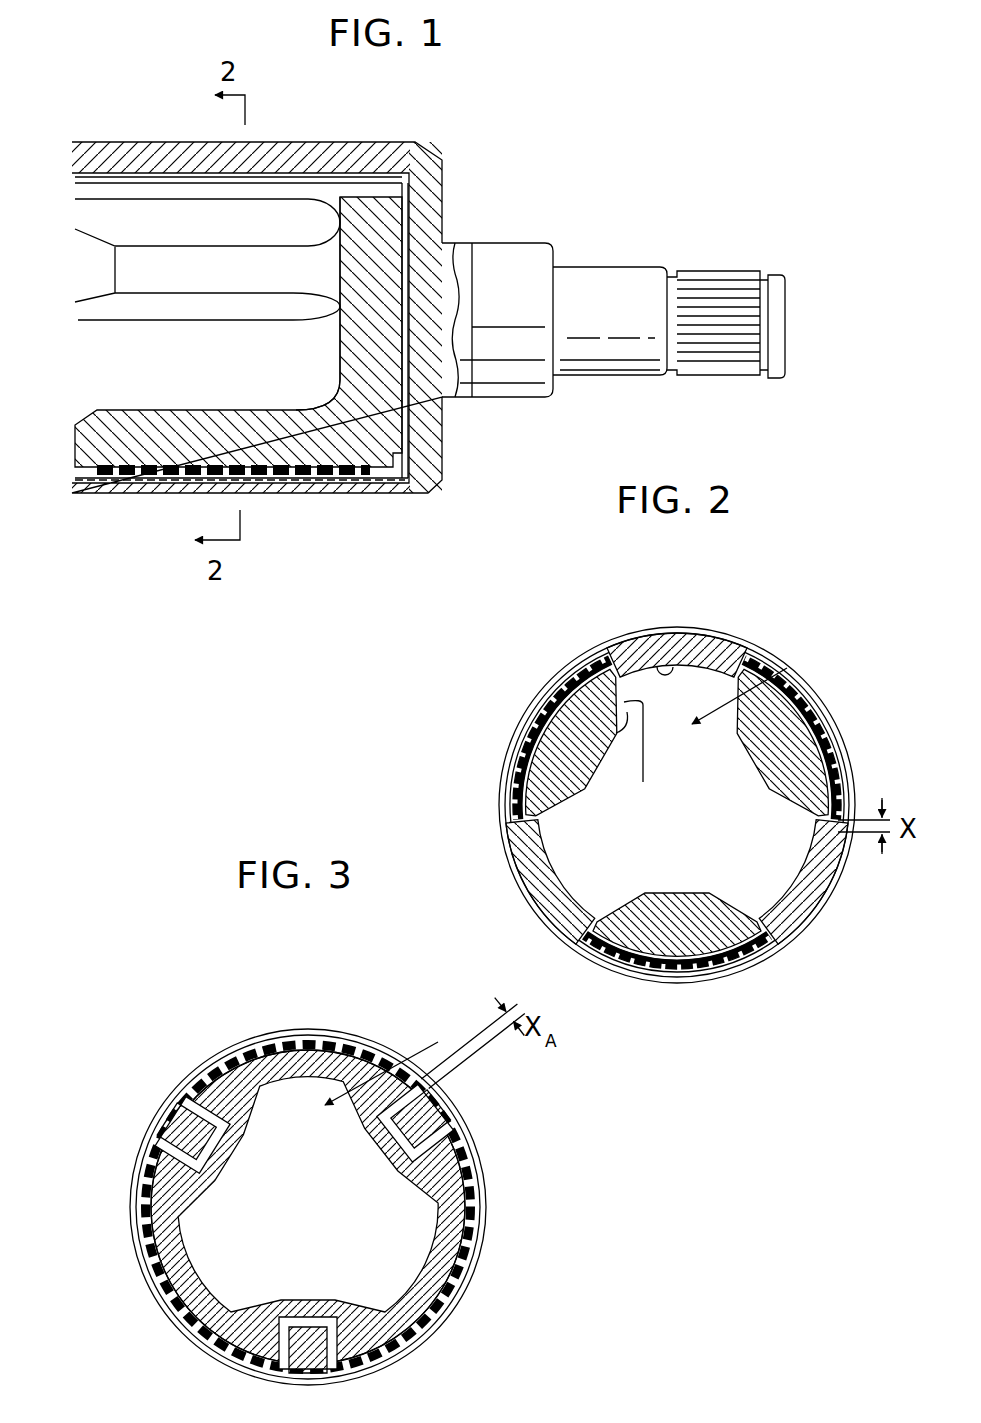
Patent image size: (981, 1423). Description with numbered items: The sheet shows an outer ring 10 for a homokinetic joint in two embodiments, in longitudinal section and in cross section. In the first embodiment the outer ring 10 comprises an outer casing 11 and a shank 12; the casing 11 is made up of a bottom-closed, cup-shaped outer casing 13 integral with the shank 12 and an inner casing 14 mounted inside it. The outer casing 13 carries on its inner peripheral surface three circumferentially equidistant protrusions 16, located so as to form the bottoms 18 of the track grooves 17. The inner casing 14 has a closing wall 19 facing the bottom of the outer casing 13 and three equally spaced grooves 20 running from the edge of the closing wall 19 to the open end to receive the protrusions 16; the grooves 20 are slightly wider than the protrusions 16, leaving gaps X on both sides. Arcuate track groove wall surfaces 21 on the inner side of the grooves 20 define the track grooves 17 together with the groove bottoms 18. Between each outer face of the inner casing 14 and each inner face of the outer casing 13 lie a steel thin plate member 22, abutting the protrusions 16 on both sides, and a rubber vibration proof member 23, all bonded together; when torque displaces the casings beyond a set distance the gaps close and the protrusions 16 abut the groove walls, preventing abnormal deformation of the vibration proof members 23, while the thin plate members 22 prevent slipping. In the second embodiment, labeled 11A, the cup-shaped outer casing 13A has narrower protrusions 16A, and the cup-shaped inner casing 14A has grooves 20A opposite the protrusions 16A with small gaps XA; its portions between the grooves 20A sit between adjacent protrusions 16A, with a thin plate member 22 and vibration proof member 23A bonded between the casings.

In FIG. 1, the outer ring 10 is at (462, 180).
In FIG. 1, the outer casing 11 is at (386, 143).
In FIG. 2, the outer casing 11 is at (822, 688).
In FIG. 1, the shank 12 is at (628, 288).
In FIG. 1, the outer casing 13 is at (324, 140).
In FIG. 2, the outer casing 13 is at (515, 748).
In FIG. 1, the inner casing 14 is at (132, 440).
In FIG. 2, the inner casing 14 is at (565, 722).
In FIG. 2, the protrusions 16 is at (711, 640).
In FIG. 2, the track grooves 17 is at (785, 670).
In FIG. 3, the track grooves 17 is at (399, 1063).
In FIG. 2, the bottoms of track grooves 18 is at (668, 660).
In FIG. 1, the closing wall 19 is at (372, 420).
In FIG. 2, the grooves 20 is at (607, 665).
In FIG. 1, the track groove wall surfaces 21 is at (153, 214).
In FIG. 2, the track groove wall surfaces 21 is at (642, 757).
In FIG. 1, the thin plate member 22 is at (387, 478).
In FIG. 2, the thin plate member 22 is at (565, 690).
In FIG. 3, the thin plate member 22 is at (150, 1270).
In FIG. 1, the vibration proof member 23 is at (308, 470).
In FIG. 2, the vibration proof member 23 is at (510, 790).
In FIG. 3, the outer ring 11A is at (471, 1130).
In FIG. 3, the outer casing 13A is at (345, 1040).
In FIG. 3, the inner casing 14A is at (293, 1055).
In FIG. 3, the protrusions 16A is at (187, 1100).
In FIG. 3, the grooves 20A is at (190, 1133).
In FIG. 3, the vibration proof member 23A is at (150, 1220).